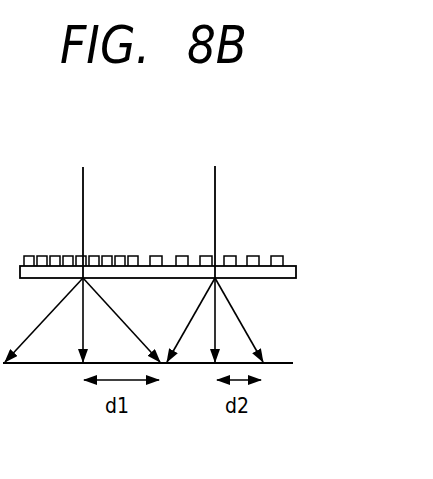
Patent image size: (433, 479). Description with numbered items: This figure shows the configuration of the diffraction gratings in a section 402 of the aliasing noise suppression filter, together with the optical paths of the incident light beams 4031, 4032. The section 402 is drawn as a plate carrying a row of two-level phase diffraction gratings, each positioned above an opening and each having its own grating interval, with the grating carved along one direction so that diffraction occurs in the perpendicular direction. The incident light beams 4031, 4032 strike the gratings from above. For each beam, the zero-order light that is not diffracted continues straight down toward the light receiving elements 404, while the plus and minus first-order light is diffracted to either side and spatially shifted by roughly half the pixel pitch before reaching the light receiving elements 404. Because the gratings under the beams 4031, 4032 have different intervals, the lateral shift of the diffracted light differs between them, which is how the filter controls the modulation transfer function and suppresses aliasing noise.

The section 402 is at (296, 266).
The incident light beam 4031 is at (84, 192).
The incident light beam 4032 is at (216, 190).
The light receiving element plane 404 is at (282, 363).